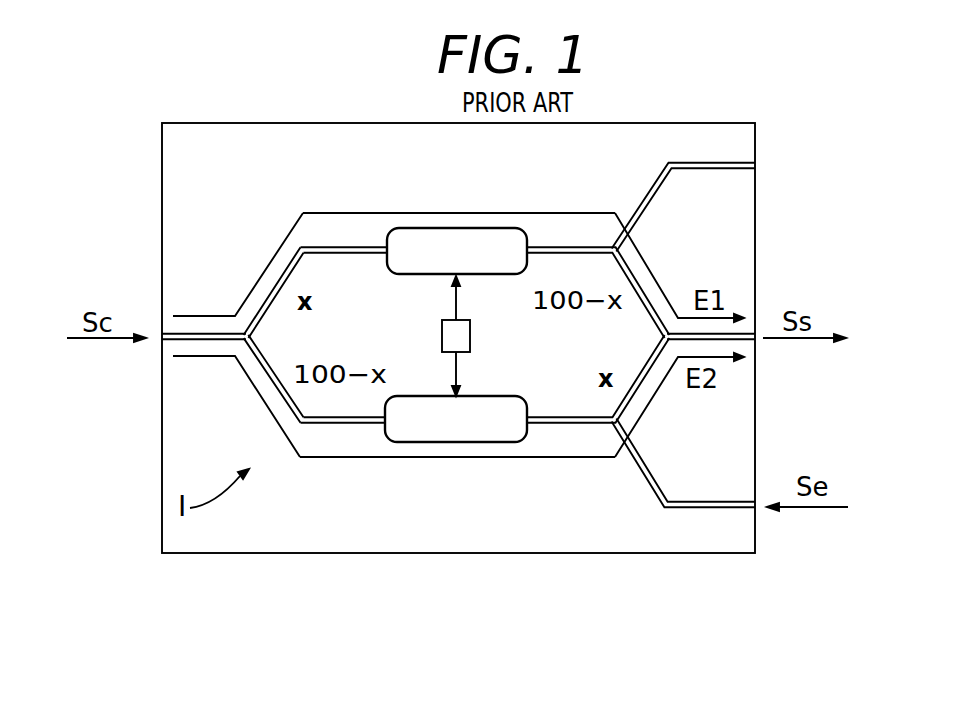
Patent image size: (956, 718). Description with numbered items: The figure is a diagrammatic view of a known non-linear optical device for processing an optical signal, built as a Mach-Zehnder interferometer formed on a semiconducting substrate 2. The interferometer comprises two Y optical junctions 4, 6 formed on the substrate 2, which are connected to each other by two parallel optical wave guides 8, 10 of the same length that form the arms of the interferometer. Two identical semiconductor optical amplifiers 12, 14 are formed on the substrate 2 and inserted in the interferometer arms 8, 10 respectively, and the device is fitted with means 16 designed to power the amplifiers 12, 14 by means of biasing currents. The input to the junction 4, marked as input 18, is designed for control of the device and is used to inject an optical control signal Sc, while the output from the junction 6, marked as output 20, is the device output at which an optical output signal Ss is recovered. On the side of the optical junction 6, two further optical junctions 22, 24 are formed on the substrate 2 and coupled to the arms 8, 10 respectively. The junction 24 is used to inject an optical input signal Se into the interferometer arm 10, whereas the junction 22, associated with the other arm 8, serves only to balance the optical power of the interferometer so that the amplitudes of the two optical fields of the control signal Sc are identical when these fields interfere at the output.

The semiconducting substrate 2 is at (474, 545).
The Y optical junction 4 is at (265, 272).
The Y optical junction 6 is at (643, 272).
The optical wave guide 8 is at (338, 238).
The optical wave guide 10 is at (352, 432).
The semiconductor optical amplifier 12 is at (458, 240).
The semiconductor optical amplifier 14 is at (451, 433).
The means for powering the amplifiers 16 is at (460, 337).
The input 18 is at (162, 338).
The output 20 is at (757, 340).
The optical junction 22 is at (660, 190).
The optical junction 24 is at (650, 468).